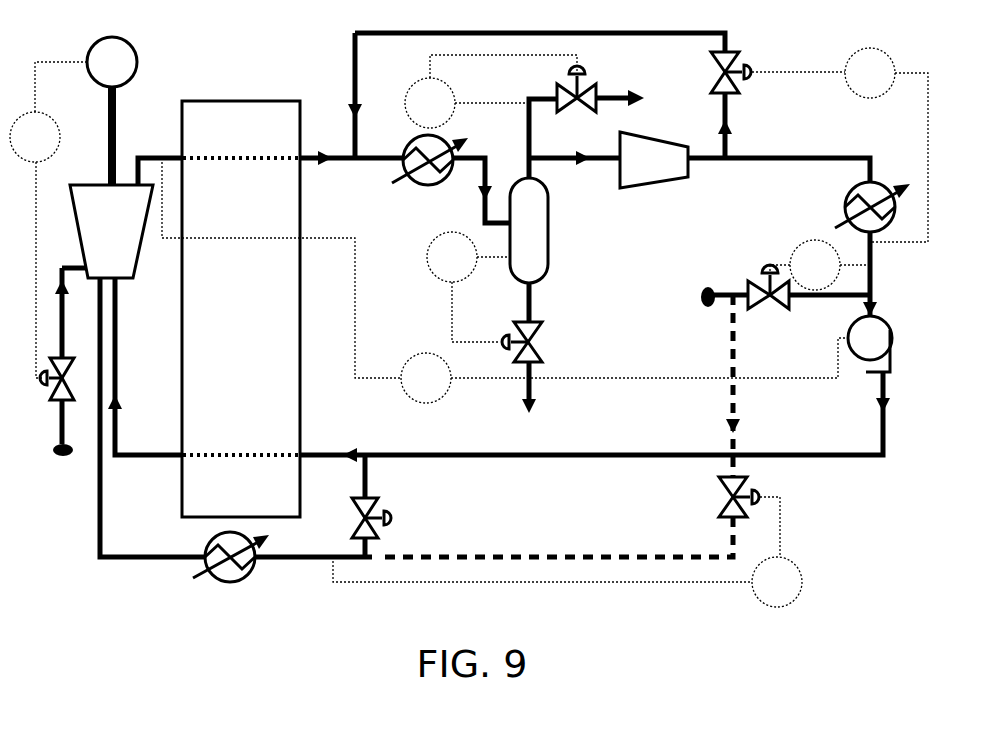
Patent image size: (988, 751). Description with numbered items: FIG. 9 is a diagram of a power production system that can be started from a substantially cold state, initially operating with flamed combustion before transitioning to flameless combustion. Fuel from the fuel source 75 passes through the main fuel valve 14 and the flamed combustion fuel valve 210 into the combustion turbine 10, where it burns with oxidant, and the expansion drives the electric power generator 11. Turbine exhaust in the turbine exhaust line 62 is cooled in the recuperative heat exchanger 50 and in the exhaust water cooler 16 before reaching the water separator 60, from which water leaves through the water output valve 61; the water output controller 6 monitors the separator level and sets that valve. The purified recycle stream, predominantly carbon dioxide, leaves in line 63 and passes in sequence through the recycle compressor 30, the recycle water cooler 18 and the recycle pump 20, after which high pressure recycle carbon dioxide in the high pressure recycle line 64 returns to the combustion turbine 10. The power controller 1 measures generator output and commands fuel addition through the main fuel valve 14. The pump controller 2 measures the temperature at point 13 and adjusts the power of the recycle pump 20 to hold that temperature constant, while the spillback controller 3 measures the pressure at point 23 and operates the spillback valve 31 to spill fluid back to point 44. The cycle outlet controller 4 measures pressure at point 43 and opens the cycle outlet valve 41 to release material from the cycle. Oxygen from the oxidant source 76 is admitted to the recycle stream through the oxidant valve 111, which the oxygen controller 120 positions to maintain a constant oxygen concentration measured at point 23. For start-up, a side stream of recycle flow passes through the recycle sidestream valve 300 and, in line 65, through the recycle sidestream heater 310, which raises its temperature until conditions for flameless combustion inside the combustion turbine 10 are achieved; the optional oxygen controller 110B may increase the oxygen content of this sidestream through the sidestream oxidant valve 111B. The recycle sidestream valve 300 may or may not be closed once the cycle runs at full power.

The power controller 1 is at (48, 112).
The pump controller 2 is at (505, 280).
The spillback controller 3 is at (840, 145).
The cycle outlet controller 4 is at (491, 91).
The water output controller 6 is at (468, 287).
The combustion turbine 10 is at (111, 231).
The electric power generator 11 is at (112, 111).
The point 13 is at (225, 147).
The main fuel valve 14 is at (71, 356).
The exhaust water cooler 16 is at (451, 179).
The recycle water cooler 18 is at (799, 195).
The recycle pump 20 is at (596, 389).
The point 23 is at (859, 274).
The recycle compressor 30 is at (654, 160).
The spillback valve 31 is at (720, 105).
The cycle outlet valve 41 is at (600, 97).
The point 43 is at (528, 138).
The point 44 is at (512, 107).
The recuperative heat exchanger 50 is at (241, 309).
The water separator 60 is at (529, 295).
The water output valve 61 is at (530, 342).
The turbine exhaust line 62 is at (137, 177).
The line 63 is at (533, 167).
The high pressure recycle line 64 is at (453, 453).
The line 65 is at (297, 553).
The fuel source 75 is at (65, 458).
The oxidant source 76 is at (705, 308).
The oxygen controller 110B is at (567, 552).
The oxidant valve 111 is at (789, 295).
The sidestream oxidant valve 111B is at (569, 426).
The oxygen controller 120 is at (820, 265).
The flamed combustion fuel valve 210 is at (54, 270).
The recycle sidestream valve 300 is at (359, 506).
The recycle sidestream heater 310 is at (242, 562).